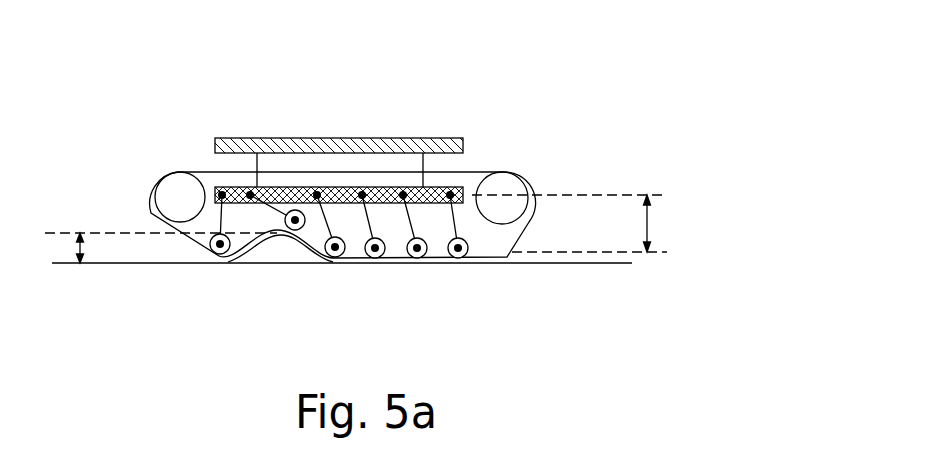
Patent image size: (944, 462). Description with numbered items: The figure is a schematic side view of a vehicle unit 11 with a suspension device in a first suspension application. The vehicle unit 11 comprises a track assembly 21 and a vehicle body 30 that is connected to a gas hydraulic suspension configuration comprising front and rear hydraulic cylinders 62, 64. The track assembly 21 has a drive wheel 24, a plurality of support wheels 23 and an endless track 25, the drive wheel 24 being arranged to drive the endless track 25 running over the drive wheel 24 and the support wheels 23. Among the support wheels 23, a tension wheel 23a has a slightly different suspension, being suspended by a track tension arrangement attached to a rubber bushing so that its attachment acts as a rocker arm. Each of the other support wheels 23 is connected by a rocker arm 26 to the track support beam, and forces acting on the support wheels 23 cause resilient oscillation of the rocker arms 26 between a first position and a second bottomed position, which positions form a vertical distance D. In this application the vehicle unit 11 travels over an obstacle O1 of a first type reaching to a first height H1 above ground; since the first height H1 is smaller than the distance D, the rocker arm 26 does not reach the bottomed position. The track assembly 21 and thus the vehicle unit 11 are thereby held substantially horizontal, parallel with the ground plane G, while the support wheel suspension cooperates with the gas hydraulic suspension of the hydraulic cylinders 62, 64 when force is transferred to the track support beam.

The vehicle unit 11 is at (529, 76).
The vehicle body 30 is at (346, 128).
The front hydraulic cylinder 62 is at (257, 165).
The rear hydraulic cylinder 64 is at (423, 165).
The drive wheel 24 is at (172, 186).
The tension wheel 23a is at (507, 187).
The support wheels 23 is at (413, 256).
The rocker arms 26 is at (425, 243).
The endless track 25 is at (528, 232).
The track assembly 21 is at (192, 259).
The obstacle O1 is at (297, 251).
The ground plane G is at (115, 273).
The first height H1 is at (161, 248).
The distance D is at (575, 223).